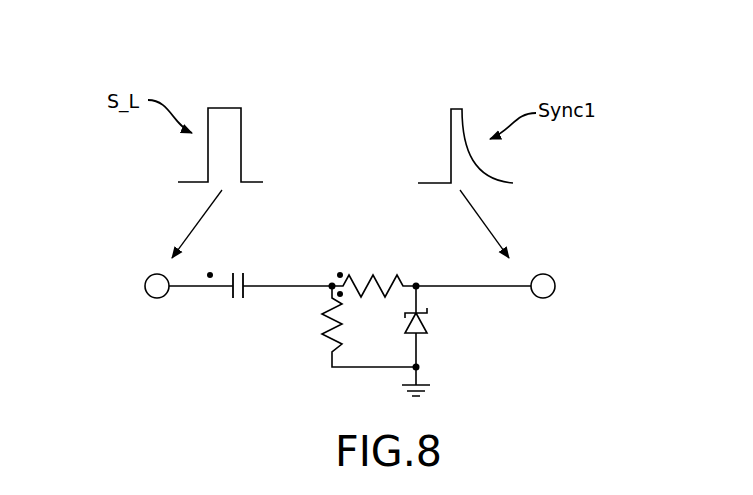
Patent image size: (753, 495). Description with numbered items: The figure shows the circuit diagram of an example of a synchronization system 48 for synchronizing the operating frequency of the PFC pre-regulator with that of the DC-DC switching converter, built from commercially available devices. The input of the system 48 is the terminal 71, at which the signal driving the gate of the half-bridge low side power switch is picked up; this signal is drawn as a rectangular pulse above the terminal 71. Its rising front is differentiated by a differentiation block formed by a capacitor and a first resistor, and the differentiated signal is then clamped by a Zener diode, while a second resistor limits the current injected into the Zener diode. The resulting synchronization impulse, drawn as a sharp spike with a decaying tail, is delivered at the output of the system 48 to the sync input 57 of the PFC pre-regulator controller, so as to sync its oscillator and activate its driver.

The synchronization system 48 is at (406, 78).
The terminal 71 is at (145, 283).
The sync input 57 is at (550, 274).